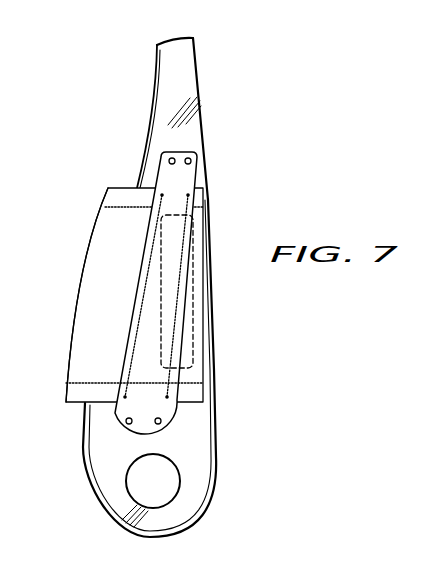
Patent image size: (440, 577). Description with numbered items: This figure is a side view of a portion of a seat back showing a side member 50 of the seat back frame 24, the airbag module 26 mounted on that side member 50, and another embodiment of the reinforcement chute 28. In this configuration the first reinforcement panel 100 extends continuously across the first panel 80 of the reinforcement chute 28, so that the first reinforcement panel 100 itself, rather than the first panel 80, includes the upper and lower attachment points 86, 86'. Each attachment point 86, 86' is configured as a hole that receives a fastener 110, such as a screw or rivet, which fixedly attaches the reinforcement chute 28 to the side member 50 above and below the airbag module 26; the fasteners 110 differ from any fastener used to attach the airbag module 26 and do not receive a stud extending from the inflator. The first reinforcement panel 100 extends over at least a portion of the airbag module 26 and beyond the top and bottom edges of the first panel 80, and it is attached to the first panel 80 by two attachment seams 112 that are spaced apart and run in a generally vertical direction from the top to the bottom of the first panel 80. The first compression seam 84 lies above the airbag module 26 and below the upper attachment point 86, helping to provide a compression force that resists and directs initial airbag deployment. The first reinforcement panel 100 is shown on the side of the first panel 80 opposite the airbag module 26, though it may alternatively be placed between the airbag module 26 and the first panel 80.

The seat back frame 24 is at (200, 275).
The seat back side member 50 is at (202, 68).
The airbag module 26 is at (193, 288).
The reinforcement chute 28 is at (95, 237).
The first panel 80 is at (110, 272).
The first compression seam 84 is at (127, 207).
The upper attachment point 86 is at (148, 292).
The lower attachment point 86' is at (88, 460).
The first reinforcement panel 100 is at (178, 175).
The fastener 110 is at (172, 158).
The attachment seam 112 is at (135, 332).